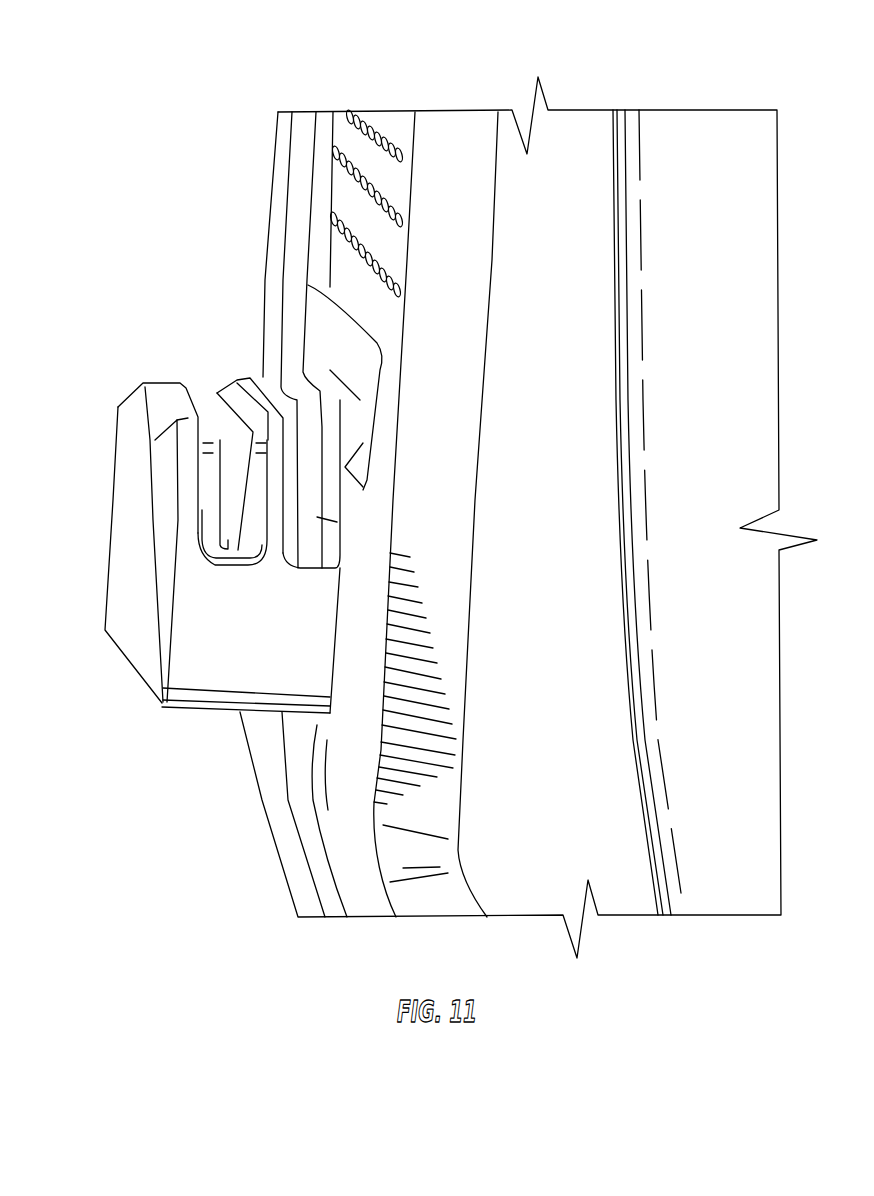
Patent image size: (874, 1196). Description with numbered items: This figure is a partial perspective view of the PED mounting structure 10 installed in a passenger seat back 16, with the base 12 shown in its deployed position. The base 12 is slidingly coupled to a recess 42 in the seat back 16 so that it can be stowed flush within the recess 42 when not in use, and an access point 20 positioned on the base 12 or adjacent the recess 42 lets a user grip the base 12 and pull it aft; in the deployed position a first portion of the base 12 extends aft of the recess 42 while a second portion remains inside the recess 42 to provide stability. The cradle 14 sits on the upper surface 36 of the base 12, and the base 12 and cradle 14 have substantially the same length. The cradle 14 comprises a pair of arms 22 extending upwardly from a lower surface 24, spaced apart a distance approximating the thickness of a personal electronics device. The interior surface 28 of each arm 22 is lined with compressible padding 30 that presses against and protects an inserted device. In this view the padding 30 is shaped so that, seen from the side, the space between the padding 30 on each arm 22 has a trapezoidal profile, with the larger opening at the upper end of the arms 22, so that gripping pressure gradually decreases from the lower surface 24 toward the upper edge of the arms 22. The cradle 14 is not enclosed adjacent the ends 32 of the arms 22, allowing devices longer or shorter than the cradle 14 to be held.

The PED mounting structure 10 is at (143, 400).
The base 12 is at (273, 683).
The cradle 14 is at (185, 493).
The passenger seat back 16 is at (453, 145).
The access point 20 is at (297, 807).
The arms 22 is at (247, 373).
The lower surface 24 is at (223, 548).
The interior surface 28 is at (200, 507).
The padding 30 is at (268, 430).
The ends 32 is at (277, 530).
The upper surface 36 is at (303, 568).
The recess 42 is at (333, 333).